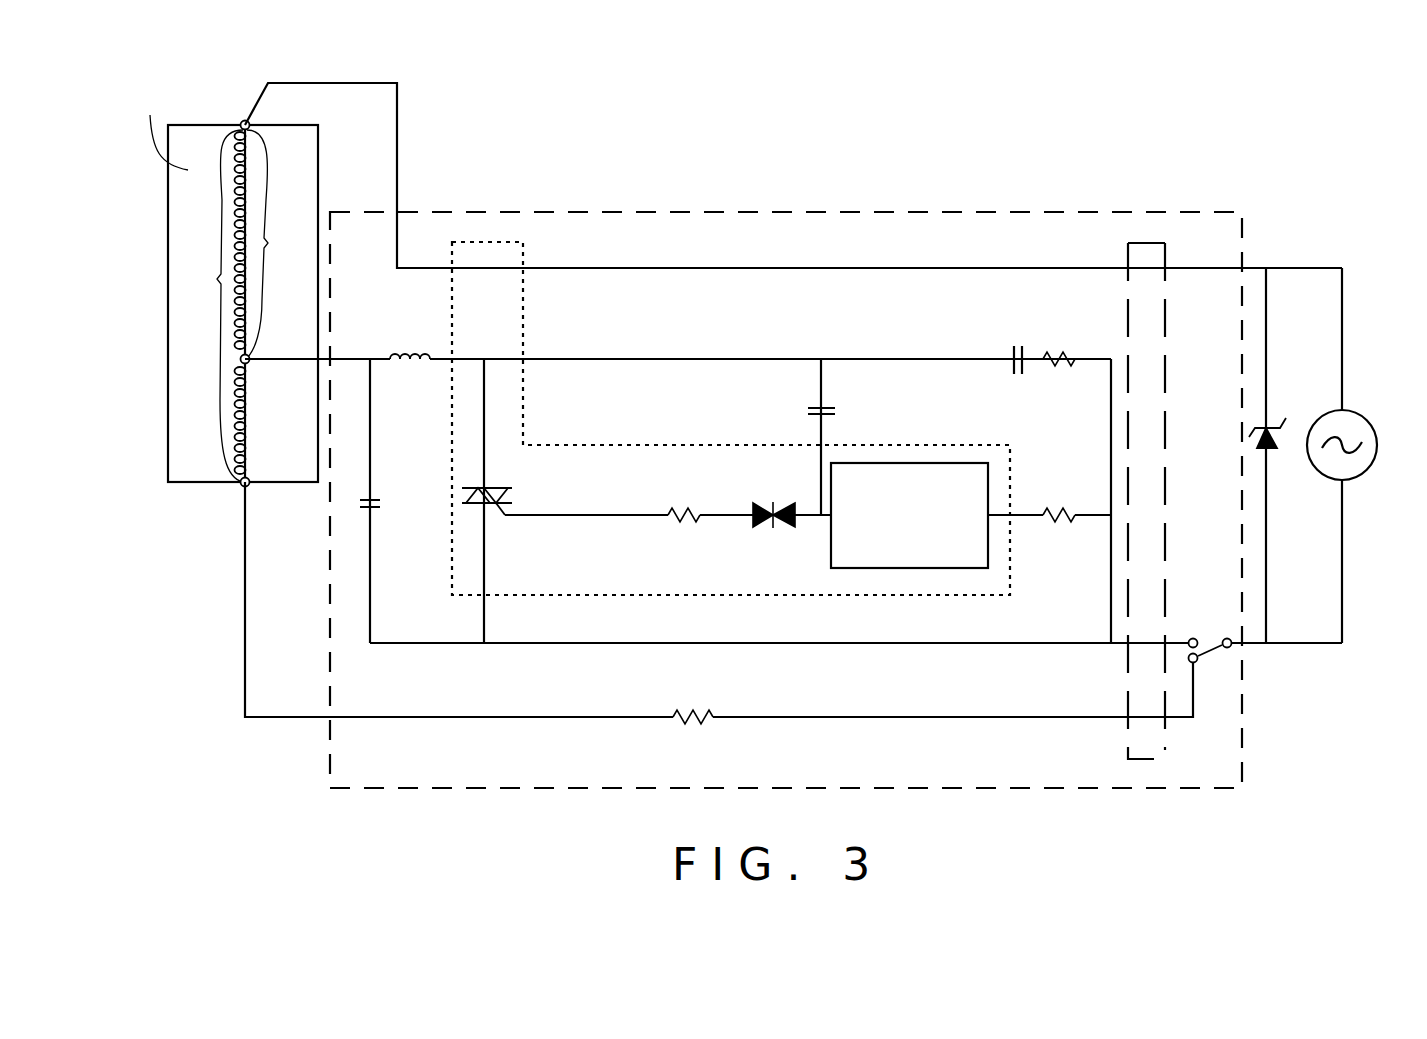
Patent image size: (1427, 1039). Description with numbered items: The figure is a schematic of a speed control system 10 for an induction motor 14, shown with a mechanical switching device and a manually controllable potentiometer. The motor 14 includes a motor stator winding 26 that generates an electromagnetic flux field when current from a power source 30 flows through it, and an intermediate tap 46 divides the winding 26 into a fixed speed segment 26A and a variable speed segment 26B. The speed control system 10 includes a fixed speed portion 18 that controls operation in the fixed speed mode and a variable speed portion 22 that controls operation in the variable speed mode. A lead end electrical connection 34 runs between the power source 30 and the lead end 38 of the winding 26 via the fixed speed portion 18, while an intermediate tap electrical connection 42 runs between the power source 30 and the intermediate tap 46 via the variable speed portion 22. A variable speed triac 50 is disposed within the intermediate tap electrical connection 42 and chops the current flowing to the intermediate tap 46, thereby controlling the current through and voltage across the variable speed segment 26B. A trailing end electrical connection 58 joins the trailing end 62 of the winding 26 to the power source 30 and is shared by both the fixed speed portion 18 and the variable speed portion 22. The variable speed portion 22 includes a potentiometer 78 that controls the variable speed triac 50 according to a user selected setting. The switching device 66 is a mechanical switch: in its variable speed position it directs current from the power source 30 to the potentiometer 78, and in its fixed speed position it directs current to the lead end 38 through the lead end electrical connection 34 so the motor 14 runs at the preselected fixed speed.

The speed control system 10 is at (900, 212).
The induction motor 14 is at (200, 482).
The fixed speed portion 18 is at (1142, 243).
The variable speed portion 22 is at (486, 242).
The motor stator winding 26 is at (258, 405).
The fixed speed segment 26A is at (211, 306).
The variable speed segment 26B is at (281, 244).
The power source 30 is at (1366, 420).
The lead end electrical connection 34 is at (245, 632).
The lead end 38 is at (250, 487).
The intermediate tap electrical connection 42 is at (357, 358).
The intermediate tap 46 is at (250, 363).
The variable speed triac 50 is at (495, 486).
The trailing end electrical connection 58 is at (397, 148).
The trailing end 62 is at (240, 120).
The switching device 66 is at (1208, 657).
The potentiometer 78 is at (972, 478).